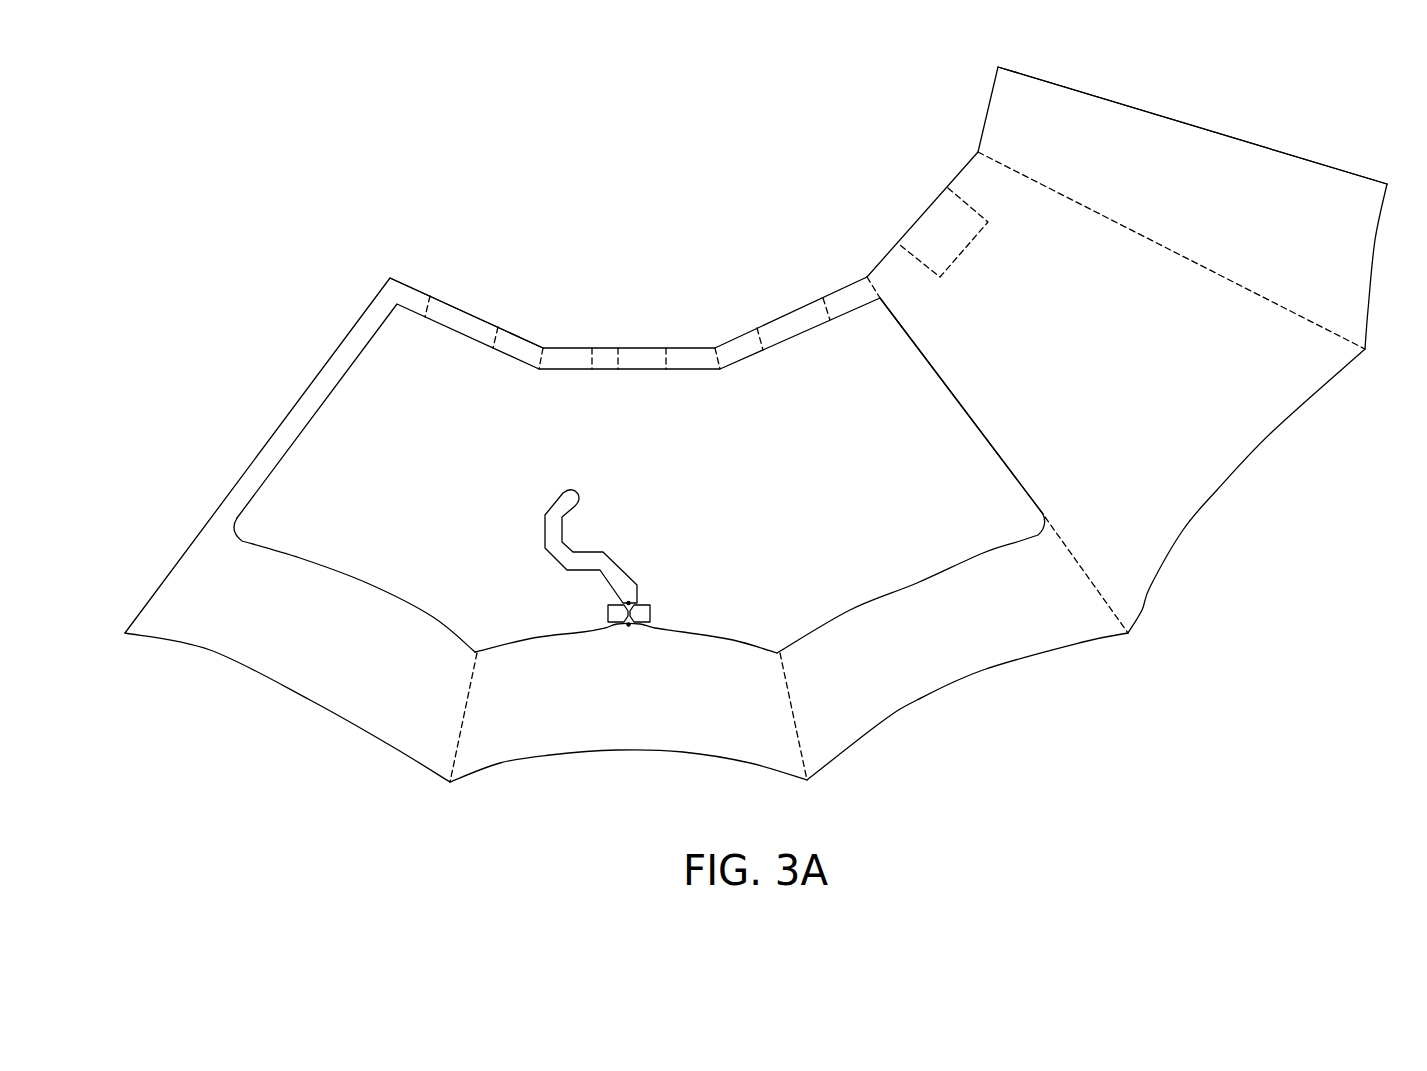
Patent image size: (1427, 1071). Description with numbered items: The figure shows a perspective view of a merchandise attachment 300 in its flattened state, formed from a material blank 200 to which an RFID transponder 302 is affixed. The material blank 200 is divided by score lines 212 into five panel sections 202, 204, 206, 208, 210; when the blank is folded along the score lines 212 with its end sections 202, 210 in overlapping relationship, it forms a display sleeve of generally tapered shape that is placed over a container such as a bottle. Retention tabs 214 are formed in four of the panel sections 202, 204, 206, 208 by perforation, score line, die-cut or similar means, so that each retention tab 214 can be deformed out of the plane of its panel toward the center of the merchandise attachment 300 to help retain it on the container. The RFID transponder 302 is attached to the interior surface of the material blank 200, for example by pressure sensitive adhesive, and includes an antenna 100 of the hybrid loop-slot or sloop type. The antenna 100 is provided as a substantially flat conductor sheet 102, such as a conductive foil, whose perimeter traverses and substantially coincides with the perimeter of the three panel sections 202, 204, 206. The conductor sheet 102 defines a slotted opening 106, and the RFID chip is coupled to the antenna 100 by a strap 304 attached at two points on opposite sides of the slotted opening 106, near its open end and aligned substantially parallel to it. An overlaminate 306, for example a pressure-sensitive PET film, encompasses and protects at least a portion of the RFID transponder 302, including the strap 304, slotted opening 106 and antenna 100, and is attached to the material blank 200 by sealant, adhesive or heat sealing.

The antenna 100 is at (885, 402).
The conductor sheet 102 is at (890, 488).
The slotted opening 106 is at (603, 552).
The material blank 200 is at (1228, 131).
The panel section 202 is at (354, 648).
The panel section 204 is at (654, 710).
The panel section 206 is at (949, 650).
The panel section 208 is at (1120, 381).
The panel section 210 is at (1214, 208).
The score lines 212 is at (1349, 349).
The retention tabs 214 is at (930, 233).
The merchandise attachment 300 is at (381, 146).
The RFID transponder 302 is at (280, 451).
The strap 304 is at (608, 614).
The overlaminate 306 is at (370, 367).